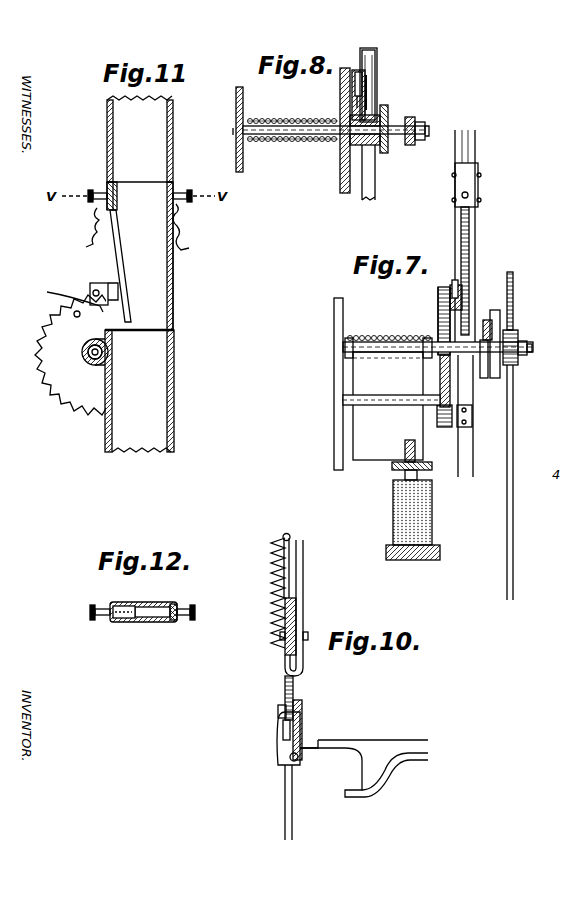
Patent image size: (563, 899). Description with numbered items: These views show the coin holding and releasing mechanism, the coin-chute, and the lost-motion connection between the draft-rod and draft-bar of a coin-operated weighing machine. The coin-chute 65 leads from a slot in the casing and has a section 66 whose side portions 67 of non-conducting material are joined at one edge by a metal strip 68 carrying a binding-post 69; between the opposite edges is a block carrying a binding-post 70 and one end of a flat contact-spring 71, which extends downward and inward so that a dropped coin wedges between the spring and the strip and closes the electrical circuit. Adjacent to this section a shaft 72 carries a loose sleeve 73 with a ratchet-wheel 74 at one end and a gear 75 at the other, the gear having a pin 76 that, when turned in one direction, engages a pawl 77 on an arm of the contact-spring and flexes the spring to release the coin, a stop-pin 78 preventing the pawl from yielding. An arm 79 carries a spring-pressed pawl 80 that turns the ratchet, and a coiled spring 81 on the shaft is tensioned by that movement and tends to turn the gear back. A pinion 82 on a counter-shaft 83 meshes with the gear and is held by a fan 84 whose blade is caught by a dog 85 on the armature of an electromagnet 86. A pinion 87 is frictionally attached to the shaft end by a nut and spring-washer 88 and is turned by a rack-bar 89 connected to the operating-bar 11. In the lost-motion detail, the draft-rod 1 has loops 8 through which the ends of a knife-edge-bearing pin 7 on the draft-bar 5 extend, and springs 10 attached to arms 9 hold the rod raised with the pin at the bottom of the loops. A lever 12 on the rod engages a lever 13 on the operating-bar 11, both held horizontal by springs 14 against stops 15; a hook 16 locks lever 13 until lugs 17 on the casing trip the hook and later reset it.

In FIG. 10, the draft-rod 1 is at (285, 822).
In FIG. 10, the draft-bar 5 is at (297, 612).
In FIG. 10, the knife-edge-bearing pin 7 is at (308, 634).
In FIG. 10, the slots or loops 8 is at (304, 560).
In FIG. 10, the arms 9 is at (288, 541).
In FIG. 10, the springs 10 is at (273, 571).
In FIG. 10, the operating-bar 11 is at (303, 722).
In FIG. 10, the lever 12 is at (278, 712).
In FIG. 10, the lever 13 is at (283, 732).
In FIG. 10, the springs 14 is at (283, 700).
In FIG. 11, the stops 15 is at (36, 340).
In FIG. 10, the stops 15 is at (290, 758).
In FIG. 10, the hook 16 is at (279, 742).
In FIG. 10, the lugs 17 is at (336, 738).
In FIG. 11, the coin-chute 65 is at (176, 127).
In FIG. 7, the coin-chute 65 is at (477, 152).
In FIG. 11, the section 66 is at (188, 232).
In FIG. 8, the section 66 is at (373, 52).
In FIG. 7, the section 66 is at (477, 213).
In FIG. 11, the side portions 67 is at (158, 290).
In FIG. 8, the side portions 67 is at (376, 80).
In FIG. 12, the side portions 67 is at (150, 602).
In FIG. 11, the metal strip 68 is at (175, 183).
In FIG. 12, the metal strip 68 is at (174, 622).
In FIG. 11, the binding-post 69 is at (181, 190).
In FIG. 12, the binding-post 69 is at (183, 600).
In FIG. 11, the binding-post 70 is at (100, 190).
In FIG. 12, the binding-post 70 is at (106, 601).
In FIG. 11, the contact-spring 71 is at (121, 249).
In FIG. 8, the contact-spring 71 is at (376, 60).
In FIG. 7, the contact-spring 71 is at (460, 232).
In FIG. 12, the contact-spring 71 is at (126, 622).
In FIG. 11, the shaft 72 is at (90, 362).
In FIG. 8, the shaft 72 is at (308, 136).
In FIG. 7, the shaft 72 is at (533, 348).
In FIG. 11, the sleeve 73 is at (82, 352).
In FIG. 8, the ratchet-wheel 74 is at (384, 154).
In FIG. 7, the ratchet-wheel 74 is at (486, 378).
In FIG. 8, the gear 75 is at (345, 193).
In FIG. 7, the gear 75 is at (438, 330).
In FIG. 11, the pin 76 is at (74, 314).
In FIG. 7, the pin 76 is at (440, 315).
In FIG. 11, the pawl 77 is at (73, 294).
In FIG. 8, the pawl 77 is at (358, 72).
In FIG. 7, the pawl 77 is at (453, 284).
In FIG. 11, the stop-pin 78 is at (92, 283).
In FIG. 8, the stop-pin 78 is at (352, 95).
In FIG. 7, the stop-pin 78 is at (450, 296).
In FIG. 7, the arm 79 is at (497, 312).
In FIG. 7, the spring-pressed pawl 80 is at (488, 320).
In FIG. 8, the coiled spring 81 is at (279, 141).
In FIG. 7, the coiled spring 81 is at (376, 337).
In FIG. 7, the pinion 82 is at (444, 428).
In FIG. 7, the counter-shaft 83 is at (343, 400).
In FIG. 8, the fan 84 is at (238, 129).
In FIG. 7, the fan 84 is at (374, 462).
In FIG. 7, the dog 85 is at (410, 450).
In FIG. 7, the electromagnet 86 is at (393, 515).
In FIG. 8, the pinion 87 is at (410, 117).
In FIG. 7, the pinion 87 is at (518, 342).
In FIG. 8, the spring-washer 88 is at (418, 141).
In FIG. 7, the spring-washer 88 is at (522, 358).
In FIG. 7, the rack-bar 89 is at (510, 272).